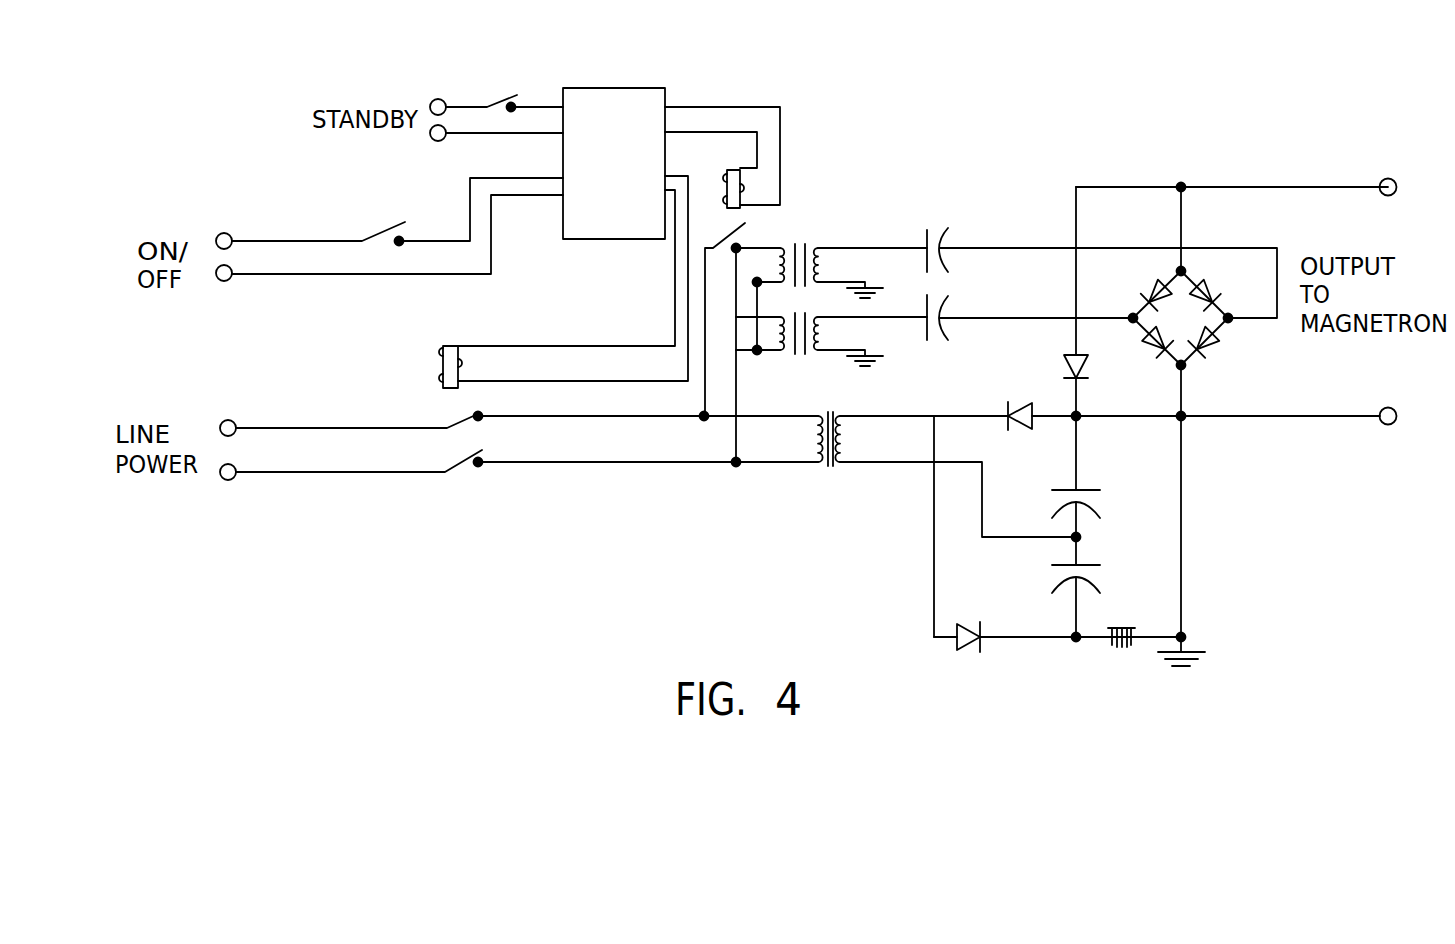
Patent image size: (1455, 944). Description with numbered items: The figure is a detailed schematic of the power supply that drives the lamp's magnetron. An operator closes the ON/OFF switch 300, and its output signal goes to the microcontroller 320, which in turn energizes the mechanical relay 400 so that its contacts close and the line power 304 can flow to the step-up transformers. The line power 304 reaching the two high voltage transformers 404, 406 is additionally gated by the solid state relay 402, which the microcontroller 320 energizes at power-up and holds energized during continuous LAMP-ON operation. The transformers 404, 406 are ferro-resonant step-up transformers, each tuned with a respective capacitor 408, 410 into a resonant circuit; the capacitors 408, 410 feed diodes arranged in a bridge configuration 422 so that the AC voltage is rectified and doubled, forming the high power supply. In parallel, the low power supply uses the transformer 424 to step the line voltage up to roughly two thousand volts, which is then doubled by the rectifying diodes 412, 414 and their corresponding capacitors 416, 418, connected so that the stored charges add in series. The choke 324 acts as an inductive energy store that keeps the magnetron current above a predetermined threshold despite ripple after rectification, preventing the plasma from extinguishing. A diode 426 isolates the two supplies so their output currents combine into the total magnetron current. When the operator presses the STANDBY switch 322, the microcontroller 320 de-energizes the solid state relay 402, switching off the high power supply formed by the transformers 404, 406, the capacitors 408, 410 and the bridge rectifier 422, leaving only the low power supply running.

The ON/OFF switch 300 is at (385, 225).
The line power 304 is at (188, 483).
The microcontroller 320 is at (598, 88).
The STANDBY switch 322 is at (500, 98).
The choke 324 is at (1117, 603).
The relay 400 is at (437, 365).
The relay 402 is at (747, 210).
The transformer 404 is at (803, 243).
The transformer 406 is at (800, 352).
The capacitor 408 is at (940, 230).
The capacitor 410 is at (942, 338).
The rectifying diode 412 is at (1008, 402).
The rectifying diode 414 is at (968, 649).
The capacitor 416 is at (1083, 490).
The capacitor 418 is at (1085, 565).
The bridge rectifier 422 is at (1223, 332).
The transformer 424 is at (827, 465).
The diode 426 is at (1088, 366).